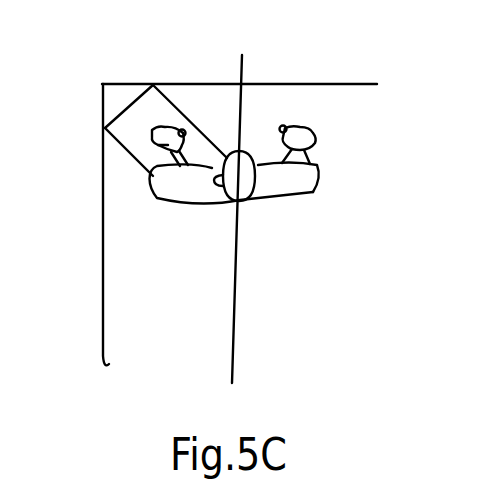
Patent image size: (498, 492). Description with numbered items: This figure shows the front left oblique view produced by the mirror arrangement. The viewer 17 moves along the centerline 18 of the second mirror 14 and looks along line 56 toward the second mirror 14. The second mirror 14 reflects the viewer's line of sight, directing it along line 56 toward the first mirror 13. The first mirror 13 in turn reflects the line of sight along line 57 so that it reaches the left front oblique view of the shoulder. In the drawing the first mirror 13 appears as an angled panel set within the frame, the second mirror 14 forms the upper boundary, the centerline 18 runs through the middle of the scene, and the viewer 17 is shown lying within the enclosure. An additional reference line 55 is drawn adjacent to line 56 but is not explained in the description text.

The first mirror 13 is at (101, 331).
The second mirror 14 is at (285, 84).
The viewer 17 is at (278, 188).
The centerline 18 is at (233, 345).
The panel edge 55 is at (187, 118).
The line 56 is at (132, 112).
The line 57 is at (130, 160).